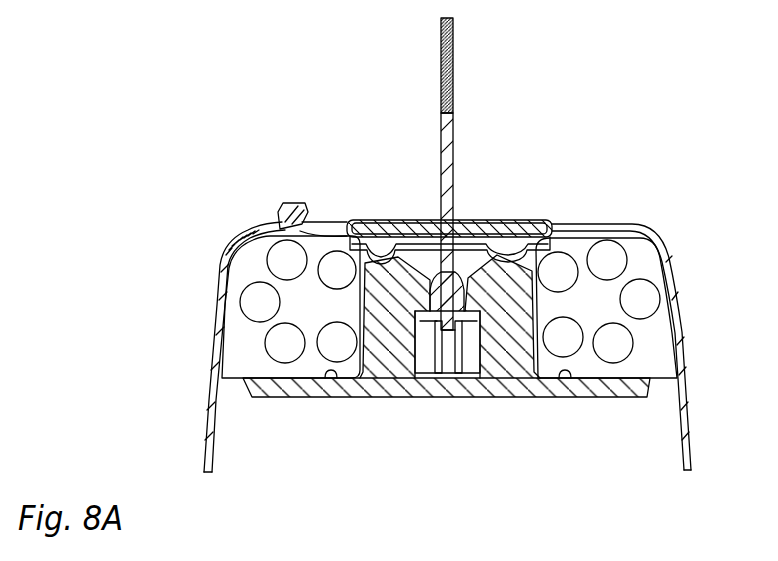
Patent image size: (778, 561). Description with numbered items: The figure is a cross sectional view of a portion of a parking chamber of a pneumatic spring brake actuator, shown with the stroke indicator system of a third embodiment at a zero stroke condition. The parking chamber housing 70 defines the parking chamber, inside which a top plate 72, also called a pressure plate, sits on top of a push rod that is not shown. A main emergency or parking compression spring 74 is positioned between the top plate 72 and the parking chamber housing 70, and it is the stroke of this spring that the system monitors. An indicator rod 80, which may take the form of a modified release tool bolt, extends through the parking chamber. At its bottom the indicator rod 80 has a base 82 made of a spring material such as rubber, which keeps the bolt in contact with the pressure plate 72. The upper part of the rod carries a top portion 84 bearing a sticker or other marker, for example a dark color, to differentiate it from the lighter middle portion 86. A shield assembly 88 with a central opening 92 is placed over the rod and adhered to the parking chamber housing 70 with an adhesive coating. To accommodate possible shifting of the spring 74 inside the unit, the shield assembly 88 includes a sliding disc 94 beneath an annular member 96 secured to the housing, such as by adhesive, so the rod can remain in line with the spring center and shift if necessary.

The parking chamber housing 70 is at (224, 256).
The top plate 72 is at (318, 398).
The parking compression spring 74 is at (242, 316).
The indicator rod 80 is at (399, 64).
The base 82 is at (455, 282).
The top portion 84 is at (454, 70).
The middle portion 86 is at (454, 162).
The shield assembly 88 is at (538, 192).
The central opening 92 is at (455, 282).
The sliding disc 94 is at (376, 220).
The annular member 96 is at (544, 221).